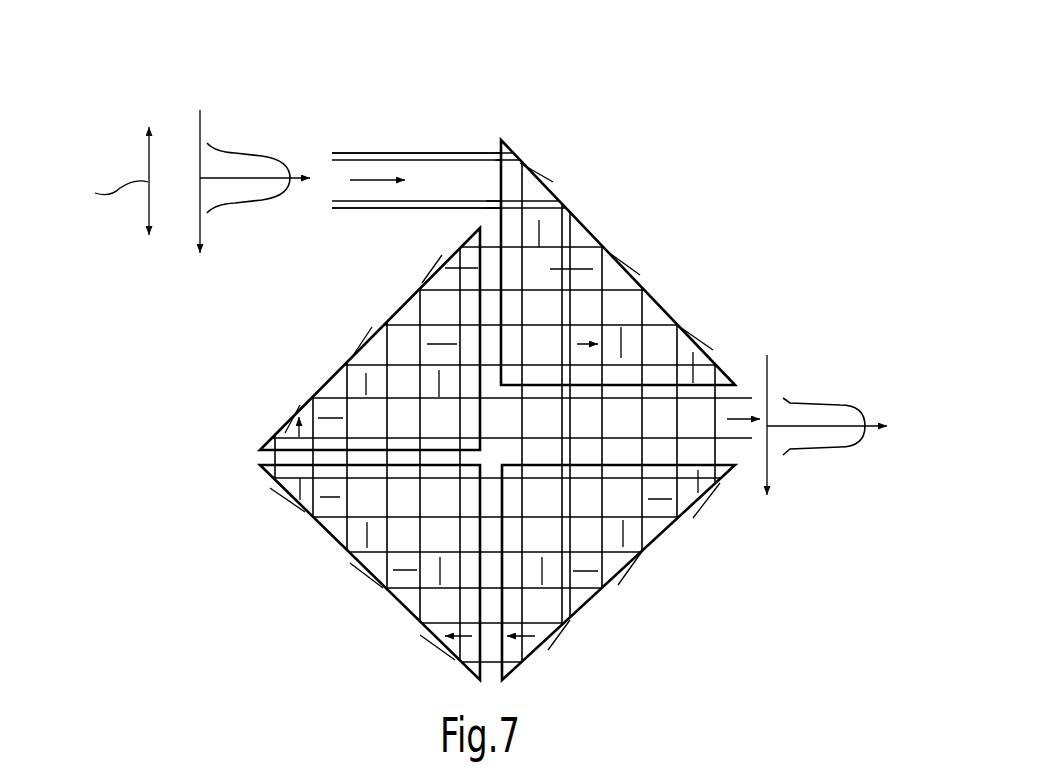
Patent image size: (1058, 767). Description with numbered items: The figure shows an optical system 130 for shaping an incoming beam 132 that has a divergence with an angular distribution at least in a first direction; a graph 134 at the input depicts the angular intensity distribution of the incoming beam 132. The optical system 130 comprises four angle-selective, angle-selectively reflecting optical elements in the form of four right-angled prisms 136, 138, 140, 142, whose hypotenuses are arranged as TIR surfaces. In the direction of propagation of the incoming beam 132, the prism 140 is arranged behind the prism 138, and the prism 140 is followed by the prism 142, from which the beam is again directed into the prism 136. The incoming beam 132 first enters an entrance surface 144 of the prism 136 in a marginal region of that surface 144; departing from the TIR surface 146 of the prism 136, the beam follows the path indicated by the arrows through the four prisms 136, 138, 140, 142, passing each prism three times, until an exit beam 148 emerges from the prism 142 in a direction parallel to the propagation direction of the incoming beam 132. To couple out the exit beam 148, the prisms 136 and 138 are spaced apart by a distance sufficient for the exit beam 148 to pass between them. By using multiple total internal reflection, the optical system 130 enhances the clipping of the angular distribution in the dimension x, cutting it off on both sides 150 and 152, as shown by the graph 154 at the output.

The optical system 130 is at (789, 258).
The incoming beam 132 is at (418, 150).
The graph 134 is at (240, 147).
The right-angled prism 136 is at (580, 240).
The right-angled prism 138 is at (607, 572).
The right-angled prism 140 is at (335, 520).
The right-angled prism 142 is at (335, 390).
The entrance surface 144 is at (498, 228).
The TIR surface 146 is at (528, 167).
The exit beam 148 is at (745, 387).
The side of the angular distribution 150 is at (350, 153).
The side of the angular distribution 152 is at (350, 207).
The graph 154 is at (833, 388).